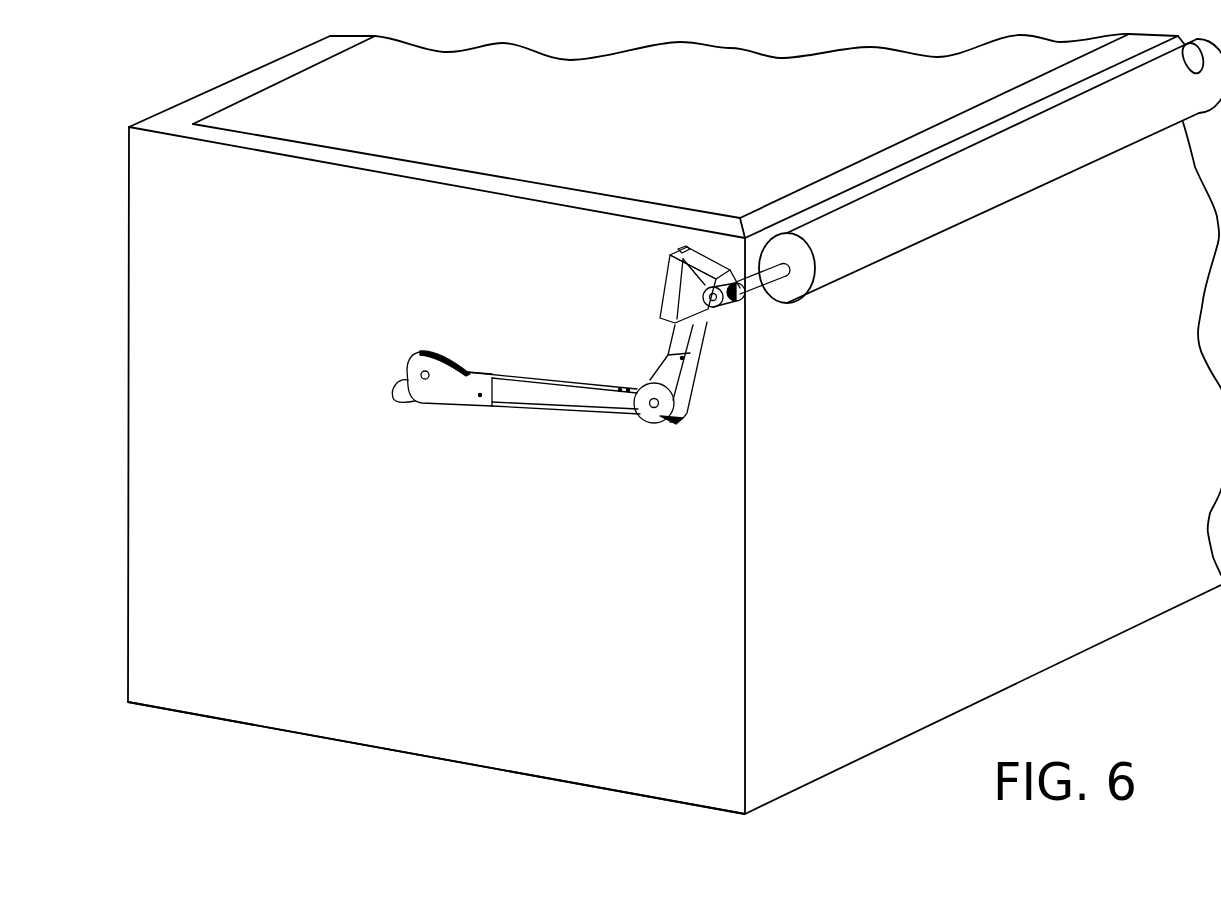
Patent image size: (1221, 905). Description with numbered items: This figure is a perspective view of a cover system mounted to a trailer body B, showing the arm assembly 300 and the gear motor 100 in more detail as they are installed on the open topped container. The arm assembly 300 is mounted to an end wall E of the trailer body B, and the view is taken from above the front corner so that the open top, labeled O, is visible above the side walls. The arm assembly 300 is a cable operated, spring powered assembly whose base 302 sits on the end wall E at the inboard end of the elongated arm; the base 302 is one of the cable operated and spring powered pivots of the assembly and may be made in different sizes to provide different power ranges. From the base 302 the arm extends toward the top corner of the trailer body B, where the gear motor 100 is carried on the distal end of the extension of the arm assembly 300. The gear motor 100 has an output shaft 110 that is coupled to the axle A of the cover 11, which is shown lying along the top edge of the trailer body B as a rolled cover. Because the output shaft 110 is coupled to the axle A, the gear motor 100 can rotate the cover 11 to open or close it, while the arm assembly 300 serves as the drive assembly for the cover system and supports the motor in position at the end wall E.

The cover 11 is at (1007, 182).
The gear motor 100 is at (711, 337).
The output shaft 110 is at (738, 282).
The arm assembly 300 is at (594, 414).
The base 302 is at (411, 393).
The axle A is at (766, 266).
The trailer body B is at (926, 363).
The opening of box O is at (700, 127).
The end wall E is at (493, 746).